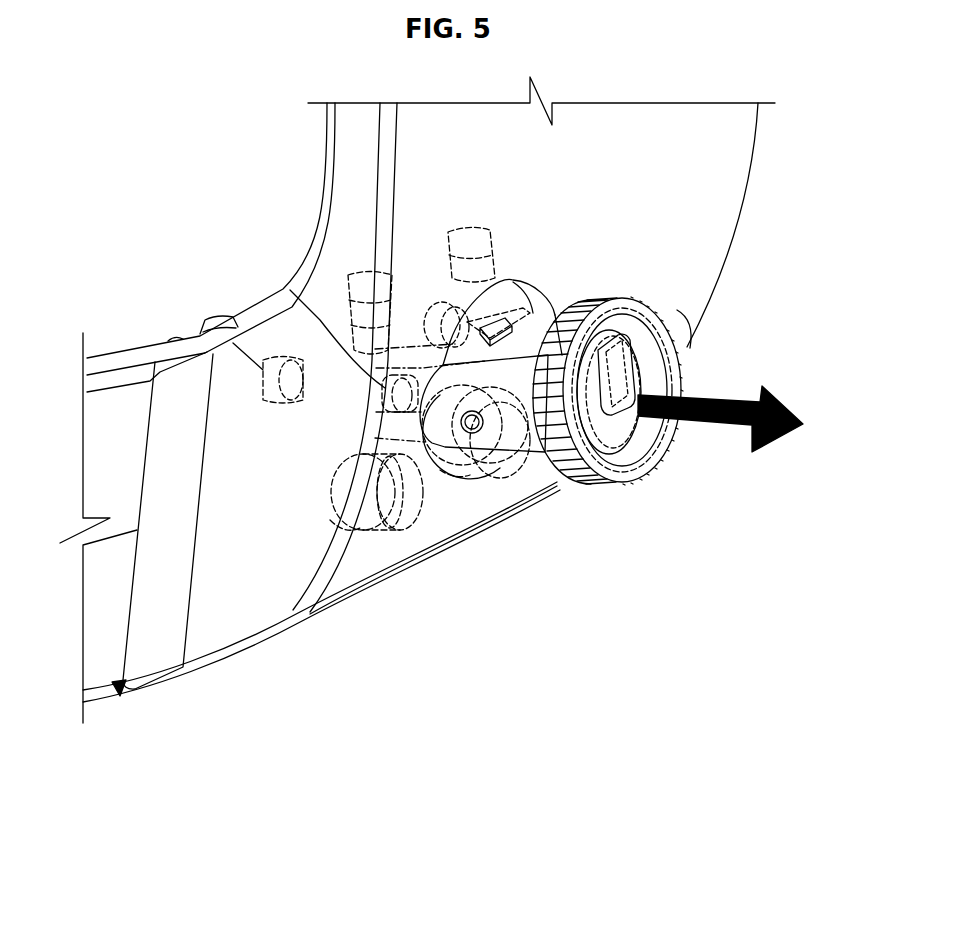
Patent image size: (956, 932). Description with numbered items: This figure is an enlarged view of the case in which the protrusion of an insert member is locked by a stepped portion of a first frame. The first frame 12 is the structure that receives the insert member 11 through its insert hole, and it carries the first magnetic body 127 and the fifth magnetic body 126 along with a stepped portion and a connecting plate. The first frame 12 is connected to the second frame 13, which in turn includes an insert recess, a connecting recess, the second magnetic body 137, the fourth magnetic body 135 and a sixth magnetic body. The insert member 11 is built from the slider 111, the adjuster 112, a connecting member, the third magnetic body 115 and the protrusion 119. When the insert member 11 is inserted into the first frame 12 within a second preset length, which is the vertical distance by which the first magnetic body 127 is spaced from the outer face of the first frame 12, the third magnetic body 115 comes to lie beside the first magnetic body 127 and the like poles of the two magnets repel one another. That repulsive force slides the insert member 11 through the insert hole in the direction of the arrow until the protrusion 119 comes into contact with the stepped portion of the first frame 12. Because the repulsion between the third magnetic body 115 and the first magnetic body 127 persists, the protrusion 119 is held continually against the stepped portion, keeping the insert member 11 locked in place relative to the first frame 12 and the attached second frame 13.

The insert member 11 is at (648, 478).
The first frame 12 is at (733, 233).
The second frame 13 is at (118, 700).
The slider 111 is at (507, 333).
The adjuster 112 is at (683, 316).
The third magnetic body 115 is at (390, 388).
The protrusion 119 is at (583, 487).
The fifth magnetic body 126 is at (460, 222).
The first magnetic body 127 is at (377, 532).
The fourth magnetic body 135 is at (226, 318).
The second magnetic body 137 is at (350, 532).